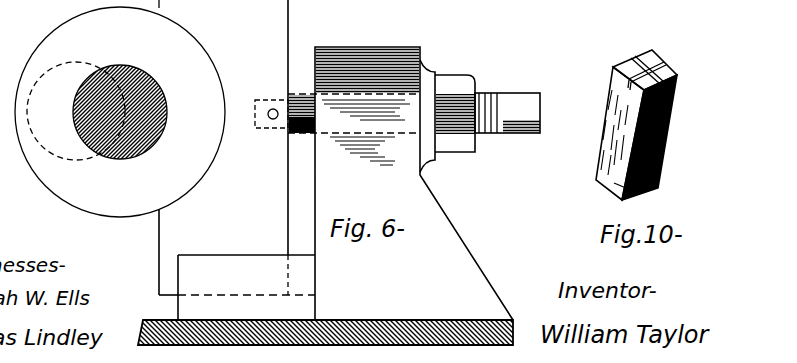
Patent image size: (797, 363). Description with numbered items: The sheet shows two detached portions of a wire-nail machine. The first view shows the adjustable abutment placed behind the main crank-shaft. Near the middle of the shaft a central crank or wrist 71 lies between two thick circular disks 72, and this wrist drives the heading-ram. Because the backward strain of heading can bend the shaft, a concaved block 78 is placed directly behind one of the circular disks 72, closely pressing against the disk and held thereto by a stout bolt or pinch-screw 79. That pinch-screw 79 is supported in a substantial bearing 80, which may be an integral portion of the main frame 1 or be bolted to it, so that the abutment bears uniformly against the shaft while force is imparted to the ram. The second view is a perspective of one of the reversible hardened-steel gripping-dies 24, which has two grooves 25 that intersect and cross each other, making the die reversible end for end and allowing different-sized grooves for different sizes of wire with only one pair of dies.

In FIG. 6, the main frame 1 is at (325, 323).
In FIG. 6, the crank or wrist 71 is at (84, 116).
In FIG. 6, the circular disks 72 is at (120, 108).
In FIG. 6, the concaved block 78 is at (237, 160).
In FIG. 6, the bolt or pinch-screw 79 is at (487, 113).
In FIG. 6, the bearing 80 is at (384, 183).
In FIG. 10, the gripping-dies 24 is at (646, 125).
In FIG. 10, the grooves 25 is at (667, 195).